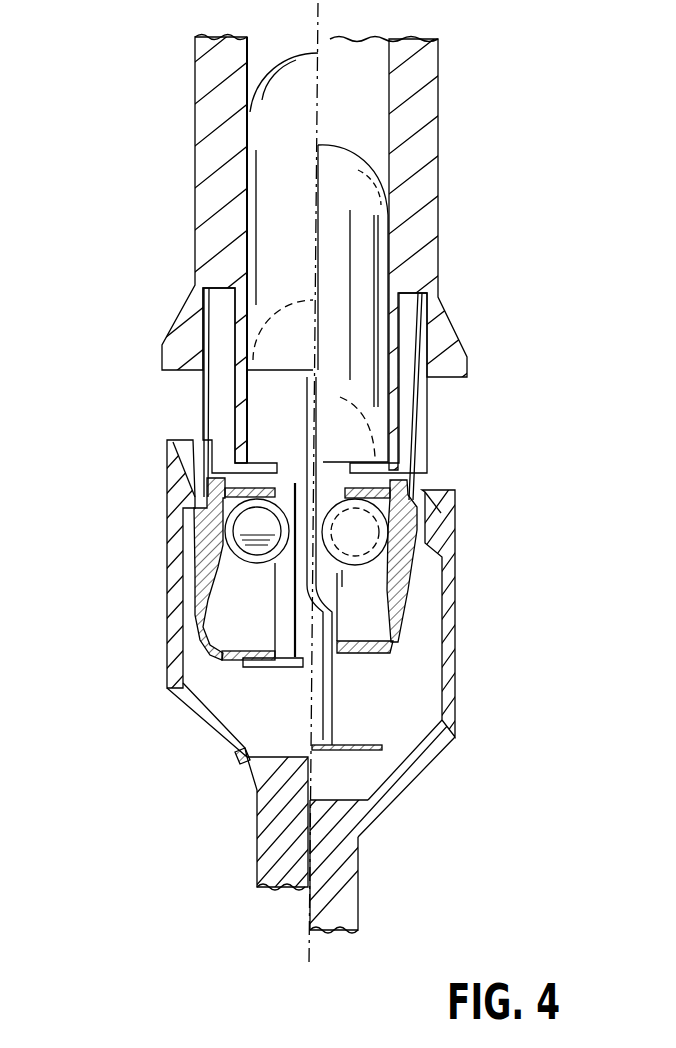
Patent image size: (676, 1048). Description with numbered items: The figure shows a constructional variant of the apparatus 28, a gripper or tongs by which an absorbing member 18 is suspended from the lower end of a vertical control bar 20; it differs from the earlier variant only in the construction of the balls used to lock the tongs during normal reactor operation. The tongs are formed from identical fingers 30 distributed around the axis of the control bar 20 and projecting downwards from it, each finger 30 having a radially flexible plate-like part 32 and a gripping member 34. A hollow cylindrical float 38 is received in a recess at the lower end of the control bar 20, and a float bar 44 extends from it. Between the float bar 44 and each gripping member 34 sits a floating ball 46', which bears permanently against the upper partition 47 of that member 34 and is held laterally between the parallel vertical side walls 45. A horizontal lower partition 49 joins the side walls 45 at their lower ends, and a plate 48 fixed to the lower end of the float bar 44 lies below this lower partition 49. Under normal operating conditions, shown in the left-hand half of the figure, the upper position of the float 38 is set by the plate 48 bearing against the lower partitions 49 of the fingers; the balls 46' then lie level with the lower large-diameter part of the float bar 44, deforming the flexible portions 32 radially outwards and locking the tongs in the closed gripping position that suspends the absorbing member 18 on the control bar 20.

The absorbing member 18 is at (288, 825).
The control bar 20 is at (215, 98).
The apparatus 28 is at (489, 422).
The fingers 30 is at (203, 405).
The flexible part 32 is at (205, 378).
The gripping member 34 is at (192, 560).
The float 38 is at (342, 170).
The float bar 44 is at (323, 683).
The side walls 45 is at (232, 613).
The floating ball 46' is at (308, 526).
The upper partition 47 is at (240, 492).
The plate 48 is at (363, 742).
The lower partition 49 is at (400, 643).